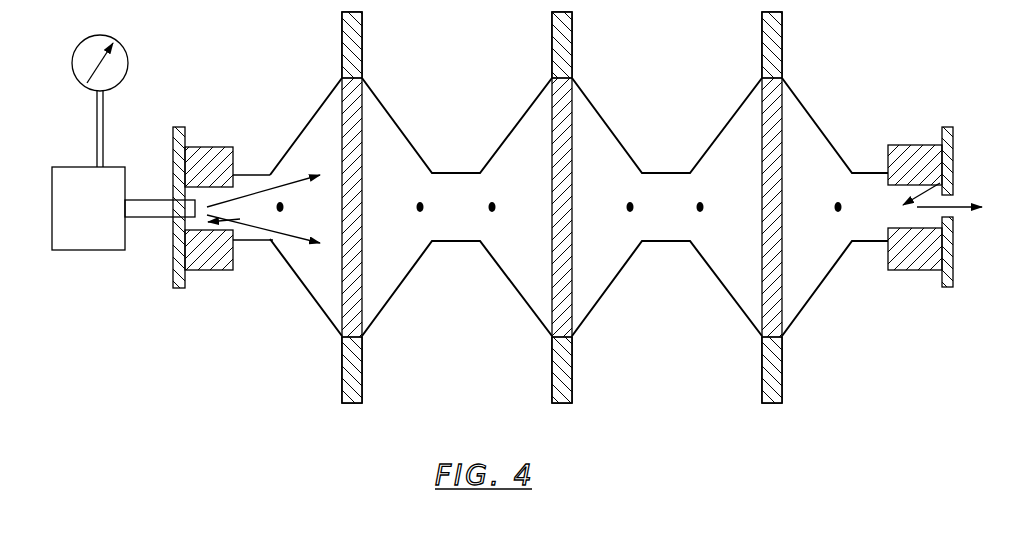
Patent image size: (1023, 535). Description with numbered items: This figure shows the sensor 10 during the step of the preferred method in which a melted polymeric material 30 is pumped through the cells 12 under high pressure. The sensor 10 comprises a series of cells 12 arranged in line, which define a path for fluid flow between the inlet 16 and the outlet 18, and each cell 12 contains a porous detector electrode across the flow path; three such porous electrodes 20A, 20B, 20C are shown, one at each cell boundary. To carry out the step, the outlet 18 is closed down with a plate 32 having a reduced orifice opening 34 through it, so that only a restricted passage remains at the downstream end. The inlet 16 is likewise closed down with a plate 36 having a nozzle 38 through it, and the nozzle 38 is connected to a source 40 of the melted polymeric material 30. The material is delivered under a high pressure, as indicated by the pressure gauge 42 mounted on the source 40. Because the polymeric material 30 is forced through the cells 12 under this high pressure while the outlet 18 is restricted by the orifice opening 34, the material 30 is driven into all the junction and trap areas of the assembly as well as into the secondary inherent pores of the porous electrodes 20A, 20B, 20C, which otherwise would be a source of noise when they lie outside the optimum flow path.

The sensor 10 is at (813, 48).
The cell 12 is at (392, 102).
The inlet 16 is at (233, 235).
The outlet 18 is at (947, 177).
The porous electrode 20A is at (347, 127).
The porous electrode 20B is at (560, 130).
The porous electrode 20C is at (768, 137).
The melted polymeric material 30 is at (270, 176).
The plate 32 is at (953, 143).
The reduced orifice opening 34 is at (947, 203).
The plate 36 is at (173, 155).
The nozzle 38 is at (160, 217).
The source 40 is at (87, 250).
The pressure gauge 42 is at (124, 70).